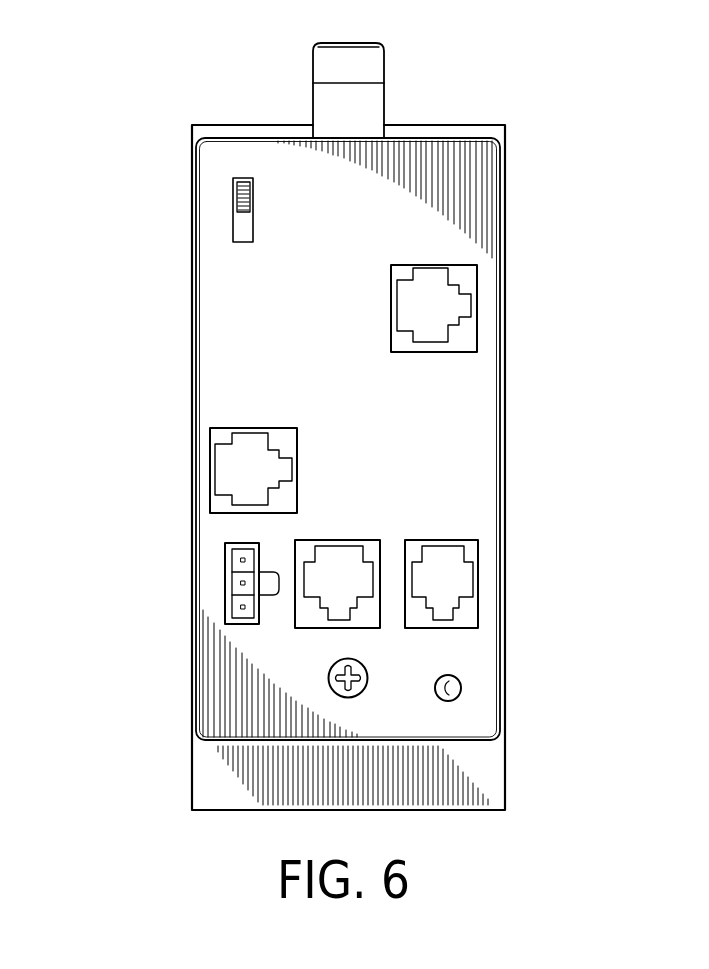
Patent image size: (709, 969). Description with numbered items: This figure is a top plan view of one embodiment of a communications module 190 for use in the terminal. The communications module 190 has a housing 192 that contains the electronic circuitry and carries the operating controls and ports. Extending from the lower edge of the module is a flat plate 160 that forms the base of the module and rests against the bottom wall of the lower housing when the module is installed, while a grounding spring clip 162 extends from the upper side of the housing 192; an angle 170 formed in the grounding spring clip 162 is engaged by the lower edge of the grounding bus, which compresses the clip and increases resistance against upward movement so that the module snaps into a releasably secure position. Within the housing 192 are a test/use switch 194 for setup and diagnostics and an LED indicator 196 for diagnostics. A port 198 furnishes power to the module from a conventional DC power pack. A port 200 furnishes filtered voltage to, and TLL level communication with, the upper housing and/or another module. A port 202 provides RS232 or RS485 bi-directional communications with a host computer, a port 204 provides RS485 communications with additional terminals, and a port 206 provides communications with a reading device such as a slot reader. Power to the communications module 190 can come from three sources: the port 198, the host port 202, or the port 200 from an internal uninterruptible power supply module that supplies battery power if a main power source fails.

The flat plate 160 is at (487, 770).
The grounding spring clip 162 is at (368, 100).
The angle 170 is at (334, 84).
The communications module 190 is at (543, 172).
The housing 192 is at (253, 335).
The test/use switch 194 is at (237, 193).
The LED indicator 196 is at (452, 688).
The port 198 is at (237, 583).
The port 200 is at (232, 472).
The port 202 is at (455, 573).
The port 204 is at (342, 560).
The port 206 is at (451, 308).